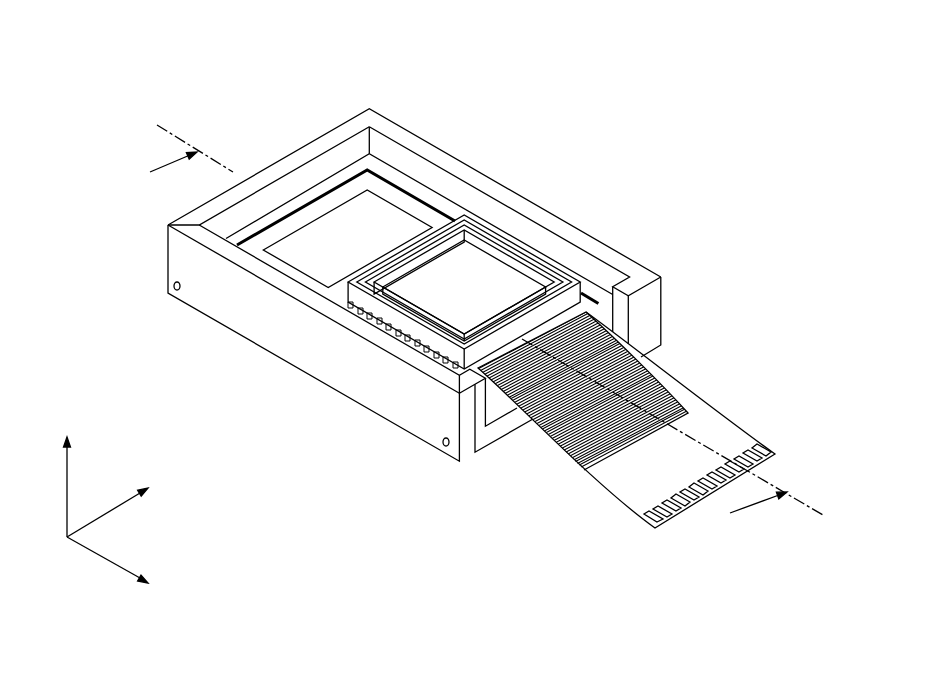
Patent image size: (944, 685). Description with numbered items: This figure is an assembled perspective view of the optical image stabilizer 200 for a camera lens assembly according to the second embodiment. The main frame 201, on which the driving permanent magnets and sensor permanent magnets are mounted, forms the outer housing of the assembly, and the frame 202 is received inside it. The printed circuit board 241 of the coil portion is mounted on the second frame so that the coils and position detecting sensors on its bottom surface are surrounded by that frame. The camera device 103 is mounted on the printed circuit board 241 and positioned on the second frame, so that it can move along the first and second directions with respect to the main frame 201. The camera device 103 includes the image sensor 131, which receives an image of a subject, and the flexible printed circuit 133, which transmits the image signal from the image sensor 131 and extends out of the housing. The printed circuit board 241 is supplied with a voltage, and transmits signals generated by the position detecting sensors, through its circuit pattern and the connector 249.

The optical image stabilizer 200 is at (586, 24).
The main frame 201 is at (150, 272).
The frame 202 is at (412, 191).
The printed circuit board 241 is at (378, 208).
The camera device 103 is at (518, 248).
The image sensor 131 is at (480, 260).
The flexible printed circuit 133 is at (580, 437).
The connector 249 is at (744, 452).